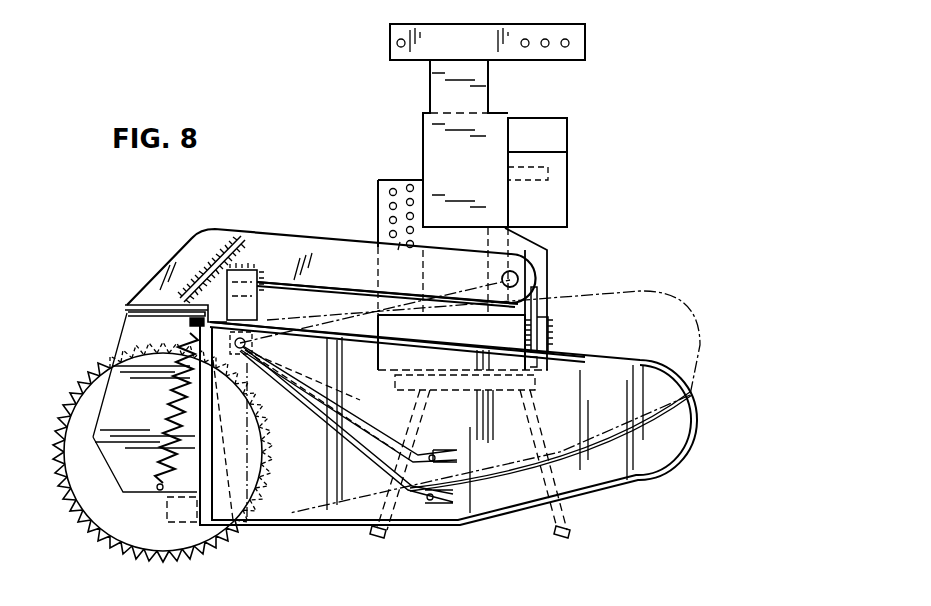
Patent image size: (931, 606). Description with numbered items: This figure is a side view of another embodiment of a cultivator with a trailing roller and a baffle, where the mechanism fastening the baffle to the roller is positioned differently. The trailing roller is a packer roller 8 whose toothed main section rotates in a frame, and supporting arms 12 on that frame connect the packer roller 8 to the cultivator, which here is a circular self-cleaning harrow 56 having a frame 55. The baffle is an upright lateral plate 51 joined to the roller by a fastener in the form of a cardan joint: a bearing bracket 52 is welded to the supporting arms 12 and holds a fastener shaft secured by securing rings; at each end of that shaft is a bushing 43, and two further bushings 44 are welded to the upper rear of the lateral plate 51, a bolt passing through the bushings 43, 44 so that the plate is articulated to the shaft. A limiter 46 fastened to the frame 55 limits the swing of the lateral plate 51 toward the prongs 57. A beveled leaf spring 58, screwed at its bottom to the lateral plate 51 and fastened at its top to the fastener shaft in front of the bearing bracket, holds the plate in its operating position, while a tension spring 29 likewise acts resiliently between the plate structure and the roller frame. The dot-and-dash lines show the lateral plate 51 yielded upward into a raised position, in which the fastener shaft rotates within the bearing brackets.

The packer roller 8 is at (118, 520).
The supporting arms 12 is at (272, 247).
The tension spring 29 is at (172, 400).
The bushing 43 is at (254, 343).
The bushings 44 is at (277, 313).
The limiter 46 is at (548, 330).
The lateral plate 51 is at (653, 458).
The bearing bracket 52 is at (283, 284).
The frame 55 is at (535, 247).
The circular self-cleaning harrow 56 is at (526, 271).
The prongs 57 is at (555, 531).
The leaf spring 58 is at (366, 442).